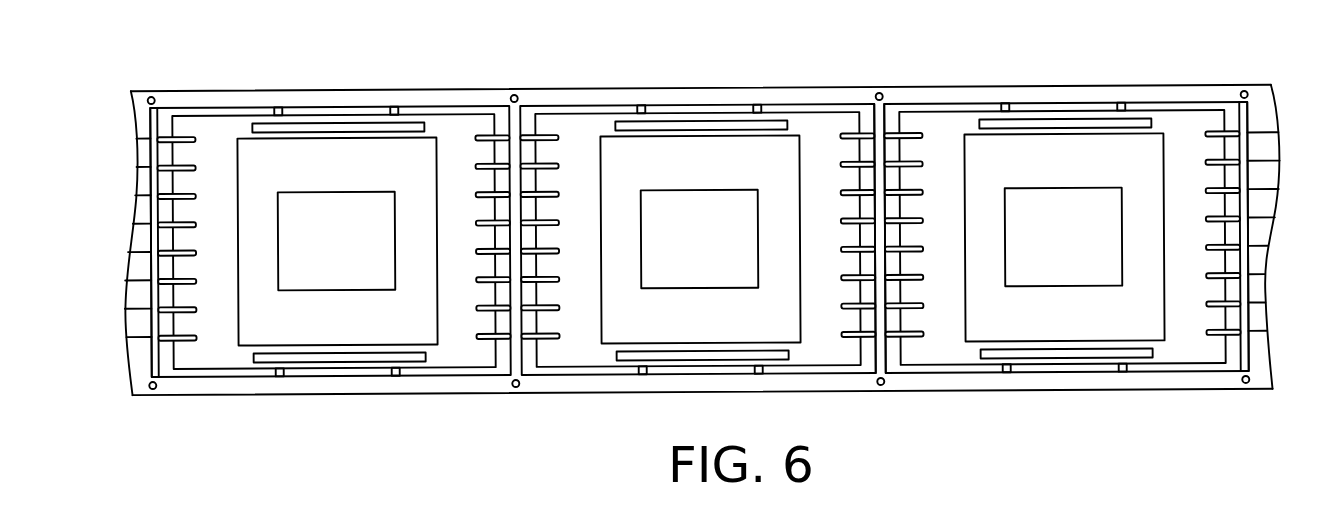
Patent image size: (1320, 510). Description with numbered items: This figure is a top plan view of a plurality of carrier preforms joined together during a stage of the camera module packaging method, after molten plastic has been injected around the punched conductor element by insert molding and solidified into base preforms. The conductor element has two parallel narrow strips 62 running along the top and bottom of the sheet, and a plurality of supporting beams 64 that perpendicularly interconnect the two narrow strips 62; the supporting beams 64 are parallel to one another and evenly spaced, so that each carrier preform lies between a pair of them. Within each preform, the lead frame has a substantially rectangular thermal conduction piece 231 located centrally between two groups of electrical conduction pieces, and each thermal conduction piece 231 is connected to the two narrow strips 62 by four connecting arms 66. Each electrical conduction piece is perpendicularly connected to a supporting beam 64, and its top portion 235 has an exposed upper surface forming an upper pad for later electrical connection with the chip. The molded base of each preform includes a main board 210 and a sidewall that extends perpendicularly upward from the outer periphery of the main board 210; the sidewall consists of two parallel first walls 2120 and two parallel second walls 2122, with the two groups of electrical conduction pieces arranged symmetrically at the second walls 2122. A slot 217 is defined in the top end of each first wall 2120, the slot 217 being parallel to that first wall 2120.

The narrow strip 62 is at (795, 98).
The supporting beam 64 is at (880, 120).
The connecting arm 66 is at (642, 112).
The main board 210 is at (408, 158).
The slot 217 is at (1067, 126).
The thermal conduction piece 231 is at (302, 203).
The top portion 235 is at (548, 132).
The first wall 2120 is at (243, 124).
The second wall 2122 is at (455, 182).